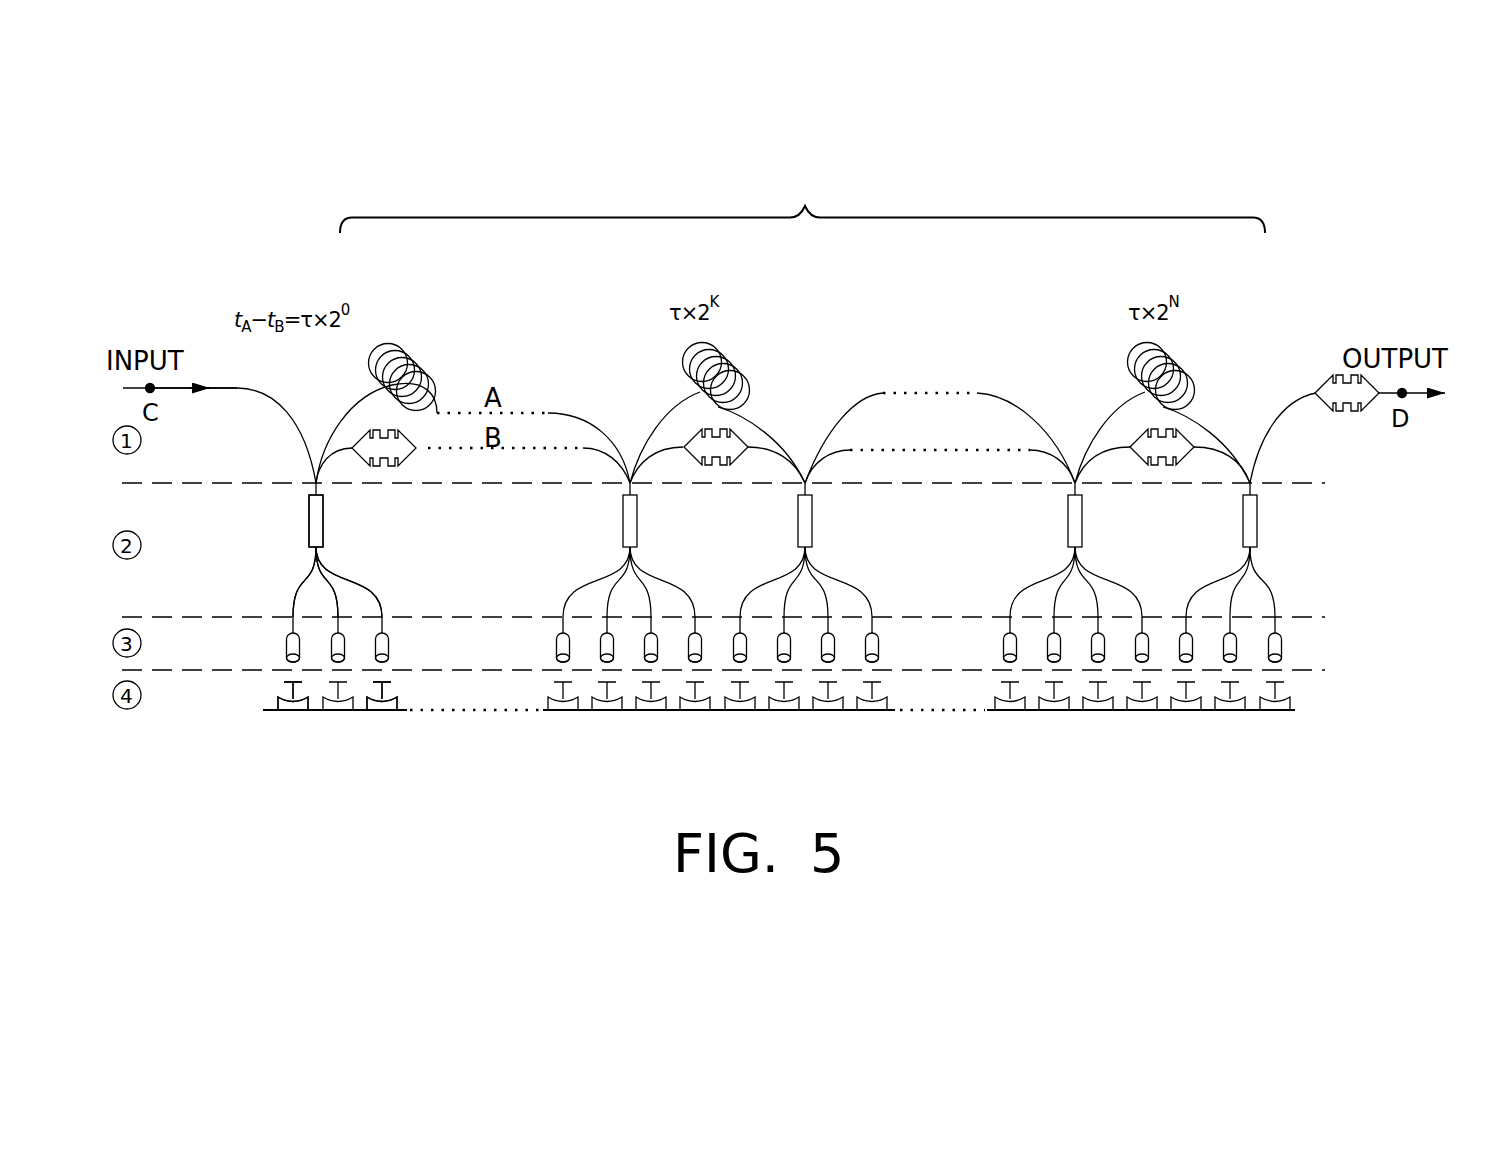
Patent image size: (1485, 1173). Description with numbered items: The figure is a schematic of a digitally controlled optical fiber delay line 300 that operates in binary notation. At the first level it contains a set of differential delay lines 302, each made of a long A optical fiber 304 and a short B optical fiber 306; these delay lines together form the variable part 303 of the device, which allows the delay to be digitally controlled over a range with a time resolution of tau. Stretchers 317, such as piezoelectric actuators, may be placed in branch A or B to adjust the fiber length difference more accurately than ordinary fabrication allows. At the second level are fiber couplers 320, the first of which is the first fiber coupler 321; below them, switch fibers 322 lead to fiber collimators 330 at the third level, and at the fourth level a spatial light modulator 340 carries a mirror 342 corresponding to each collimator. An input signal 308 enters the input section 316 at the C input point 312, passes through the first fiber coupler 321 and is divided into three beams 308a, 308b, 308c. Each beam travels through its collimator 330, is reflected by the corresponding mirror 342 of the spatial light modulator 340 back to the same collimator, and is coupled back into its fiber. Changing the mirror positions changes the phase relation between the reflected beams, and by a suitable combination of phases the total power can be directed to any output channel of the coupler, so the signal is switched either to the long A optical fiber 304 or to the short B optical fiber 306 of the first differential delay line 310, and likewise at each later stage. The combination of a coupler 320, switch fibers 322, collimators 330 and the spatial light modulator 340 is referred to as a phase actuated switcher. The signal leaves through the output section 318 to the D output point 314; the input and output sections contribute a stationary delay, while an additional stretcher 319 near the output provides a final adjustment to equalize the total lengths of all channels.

The optical fiber delay line 300 is at (287, 220).
The variable part 303 is at (805, 206).
The differential delay lines 302 is at (626, 330).
The A optical fiber 304 is at (553, 413).
The B optical fiber 306 is at (600, 450).
The input signal 308 is at (208, 385).
The first differential delay line 310 is at (393, 332).
The C input point 312 is at (153, 392).
The D output point 314 is at (1405, 400).
The input section 316 is at (238, 388).
The stretchers 317 is at (386, 466).
The output section 318 is at (1268, 418).
The additional stretcher 319 is at (1343, 412).
The fiber couplers 320 is at (297, 510).
The first fiber coupler 321 is at (323, 523).
The switch fibers 322 is at (285, 595).
The beam 308a is at (313, 580).
The beam 308b is at (333, 600).
The beam 308c is at (383, 627).
The fiber collimators 330 is at (275, 643).
The spatial light modulator 340 is at (308, 730).
The mirror 342 is at (287, 697).